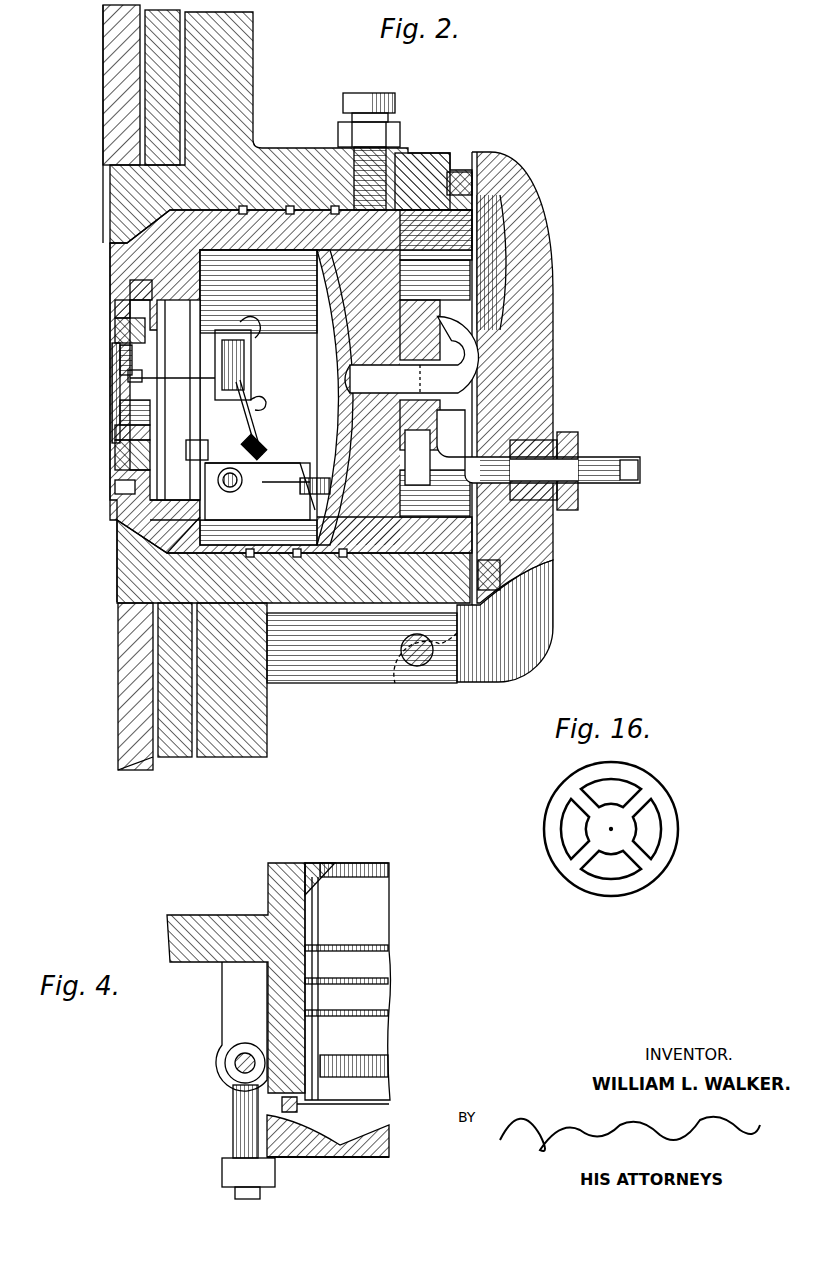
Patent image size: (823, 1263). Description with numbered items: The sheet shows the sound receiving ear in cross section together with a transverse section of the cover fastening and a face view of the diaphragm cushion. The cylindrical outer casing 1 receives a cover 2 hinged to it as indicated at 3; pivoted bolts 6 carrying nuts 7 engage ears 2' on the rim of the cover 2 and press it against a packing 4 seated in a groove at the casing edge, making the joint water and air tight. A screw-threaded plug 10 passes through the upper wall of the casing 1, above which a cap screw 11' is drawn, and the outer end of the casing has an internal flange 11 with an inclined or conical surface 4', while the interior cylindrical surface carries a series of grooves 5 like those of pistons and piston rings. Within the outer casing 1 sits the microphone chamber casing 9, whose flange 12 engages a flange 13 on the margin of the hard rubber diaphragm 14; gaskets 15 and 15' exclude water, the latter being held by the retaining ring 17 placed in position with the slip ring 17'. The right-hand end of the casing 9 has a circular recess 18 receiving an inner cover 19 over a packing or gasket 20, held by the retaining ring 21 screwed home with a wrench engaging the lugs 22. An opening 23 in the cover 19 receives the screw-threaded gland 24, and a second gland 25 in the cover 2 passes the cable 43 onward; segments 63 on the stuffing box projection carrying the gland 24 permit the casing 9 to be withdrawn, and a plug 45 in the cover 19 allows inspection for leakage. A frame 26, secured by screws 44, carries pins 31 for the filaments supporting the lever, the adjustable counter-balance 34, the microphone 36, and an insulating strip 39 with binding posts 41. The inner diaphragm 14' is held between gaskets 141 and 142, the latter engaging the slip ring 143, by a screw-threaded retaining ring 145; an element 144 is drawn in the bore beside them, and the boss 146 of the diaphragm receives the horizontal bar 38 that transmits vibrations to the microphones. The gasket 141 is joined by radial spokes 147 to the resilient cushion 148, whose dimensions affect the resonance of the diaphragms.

In FIG. 2, the outer casing 1 is at (253, 118).
In FIG. 4, the outer casing 1 is at (226, 915).
In FIG. 2, the cover 2 is at (513, 417).
In FIG. 4, the cover 2 is at (328, 1147).
In FIG. 4, the ears 2' is at (328, 1173).
In FIG. 2, the hinge 3 is at (420, 672).
In FIG. 2, the packing 4 is at (534, 574).
In FIG. 4, the packing 4 is at (244, 1115).
In FIG. 2, the inclined or conical surface 4' is at (123, 223).
In FIG. 4, the inclined or conical surface 4' is at (311, 866).
In FIG. 2, the grooves 5 is at (243, 206).
In FIG. 4, the pivoted bolts 6 is at (238, 1096).
In FIG. 4, the nuts 7 is at (222, 1178).
In FIG. 2, the microphone chamber casing 9 is at (270, 253).
In FIG. 2, the screw-threaded plug 10 is at (335, 206).
In FIG. 2, the internal flange 11 is at (270, 381).
In FIG. 4, the internal flange 11 is at (348, 970).
In FIG. 2, the cap screw 11' is at (369, 137).
In FIG. 2, the flange 12 is at (118, 487).
In FIG. 2, the flange 13 is at (150, 497).
In FIG. 2, the diaphragm 14 is at (108, 434).
In FIG. 2, the diaphragm 14' is at (93, 391).
In FIG. 2, the gasket 15 is at (110, 393).
In FIG. 2, the gasket 15' is at (135, 535).
In FIG. 2, the retaining ring 17 is at (140, 551).
In FIG. 2, the slip ring 17' is at (197, 444).
In FIG. 2, the circular recess 18 is at (310, 245).
In FIG. 2, the inner cover 19 is at (340, 300).
In FIG. 2, the packing or gasket 20 is at (330, 235).
In FIG. 2, the retaining ring 21 is at (473, 213).
In FIG. 2, the lugs 22 is at (430, 280).
In FIG. 2, the opening 23 is at (366, 340).
In FIG. 2, the screw-threaded gland 24 is at (452, 336).
In FIG. 2, the screw-threaded gland 25 is at (555, 435).
In FIG. 2, the frame or base 26 is at (245, 512).
In FIG. 2, the pin 31 is at (262, 480).
In FIG. 2, the adjustable weight or counter-balance 34 is at (315, 477).
In FIG. 2, the microphone 36 is at (252, 368).
In FIG. 2, the horizontal bar 38 is at (172, 373).
In FIG. 2, the strip of insulating material 39 is at (250, 430).
In FIG. 2, the binding posts 41 is at (255, 455).
In FIG. 2, the cable 43 is at (600, 460).
In FIG. 2, the screws 44 is at (258, 517).
In FIG. 2, the screw-threaded plug 45 is at (408, 473).
In FIG. 2, the segments 63 is at (440, 330).
In FIG. 2, the gasket 141 is at (120, 320).
In FIG. 16, the gasket 141 is at (574, 781).
In FIG. 2, the gasket 142 is at (125, 312).
In FIG. 2, the slip ring 143 is at (118, 462).
In FIG. 2, the spring 144 is at (143, 425).
In FIG. 2, the screw-threaded retaining ring 145 is at (178, 400).
In FIG. 2, the boss 146 is at (128, 385).
In FIG. 16, the radial spokes 147 is at (642, 813).
In FIG. 2, the cushion 148 is at (118, 378).
In FIG. 16, the cushion 148 is at (615, 857).